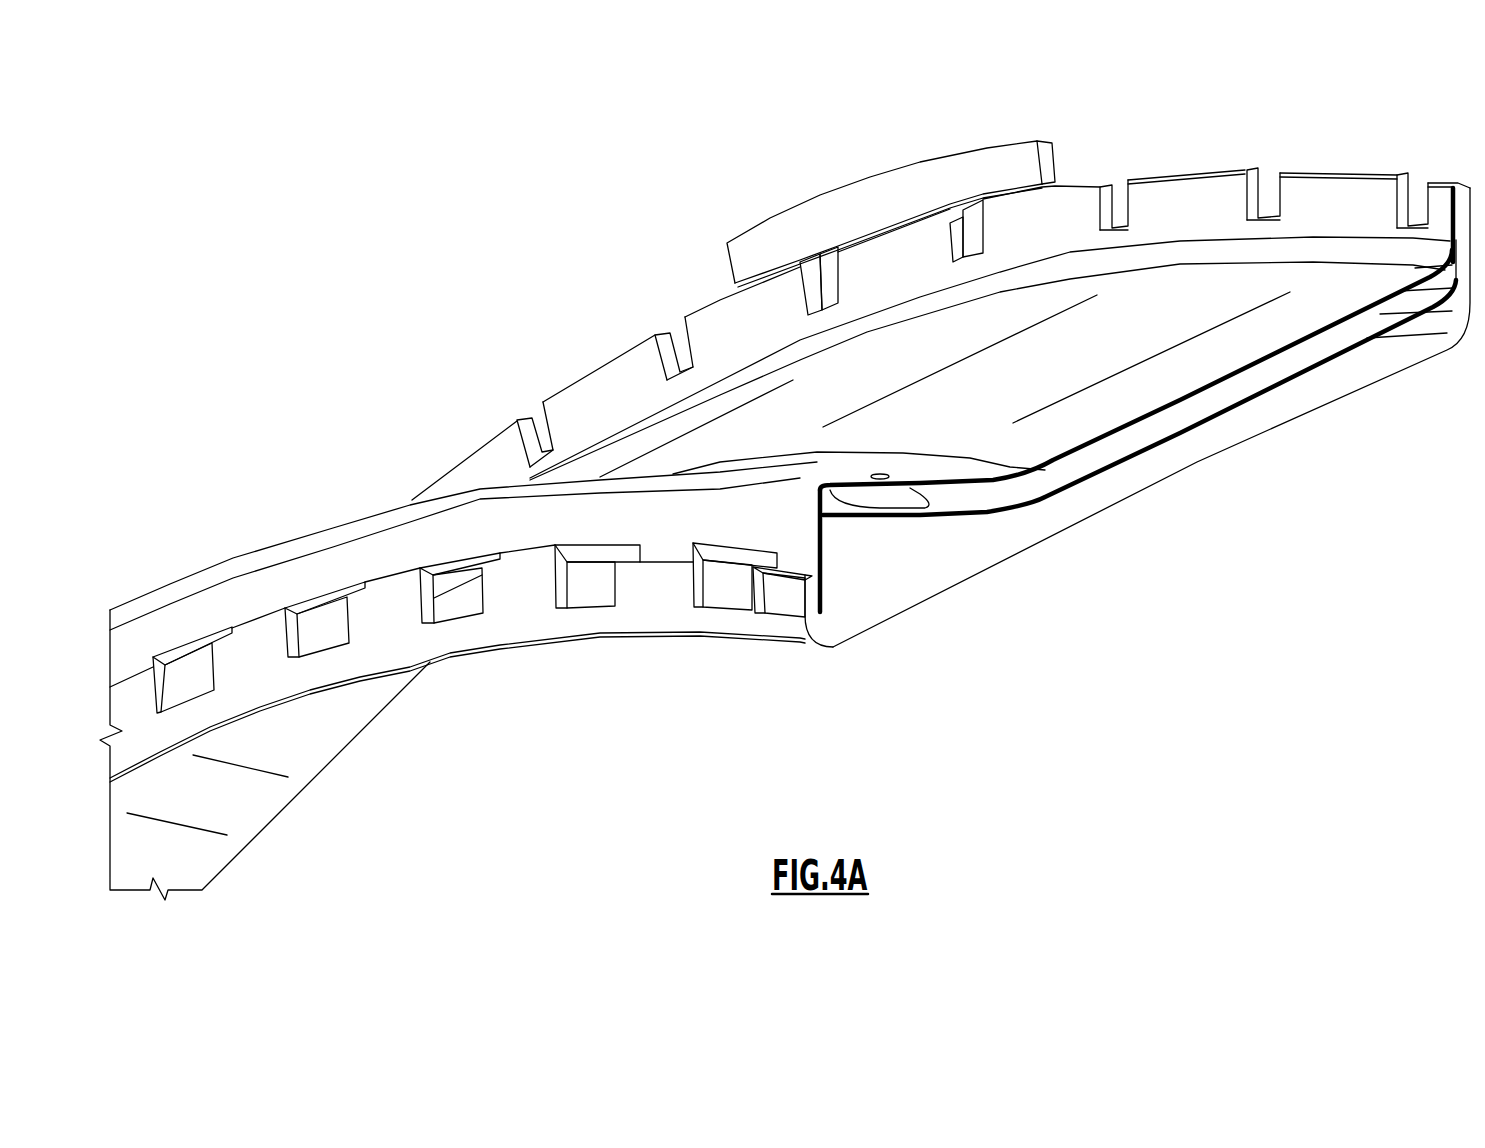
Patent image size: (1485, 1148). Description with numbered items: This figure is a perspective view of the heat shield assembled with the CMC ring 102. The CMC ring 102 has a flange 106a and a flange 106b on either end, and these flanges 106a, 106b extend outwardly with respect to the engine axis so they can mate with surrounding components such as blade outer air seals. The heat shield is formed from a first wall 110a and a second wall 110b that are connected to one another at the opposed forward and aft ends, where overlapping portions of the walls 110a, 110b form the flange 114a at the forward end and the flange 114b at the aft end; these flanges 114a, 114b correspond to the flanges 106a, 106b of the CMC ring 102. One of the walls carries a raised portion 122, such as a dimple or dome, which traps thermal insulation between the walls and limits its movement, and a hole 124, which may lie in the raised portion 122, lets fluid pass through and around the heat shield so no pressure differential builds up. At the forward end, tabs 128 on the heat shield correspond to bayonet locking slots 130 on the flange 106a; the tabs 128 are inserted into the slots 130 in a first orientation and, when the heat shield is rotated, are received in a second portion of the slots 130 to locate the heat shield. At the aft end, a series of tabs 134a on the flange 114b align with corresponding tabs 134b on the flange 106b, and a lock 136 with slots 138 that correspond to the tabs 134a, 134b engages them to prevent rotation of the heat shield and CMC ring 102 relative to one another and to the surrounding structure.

The CMC ring 102 is at (1197, 462).
The flange of the CMC ring 106a is at (810, 598).
The flange of the CMC ring 106b is at (1348, 163).
The first wall 110a is at (1253, 370).
The second wall 110b is at (1340, 357).
The flange of the heat shield 114a is at (830, 576).
The flange of the heat shield 114b is at (1446, 238).
The raised portion 122 is at (890, 497).
The hole 124 is at (883, 470).
The tab 128 is at (800, 560).
The bayonet locking slot 130 is at (726, 590).
The tab 134a is at (1203, 208).
The tab 134b is at (1248, 168).
The lock 136 is at (873, 210).
The slot 138 is at (826, 305).